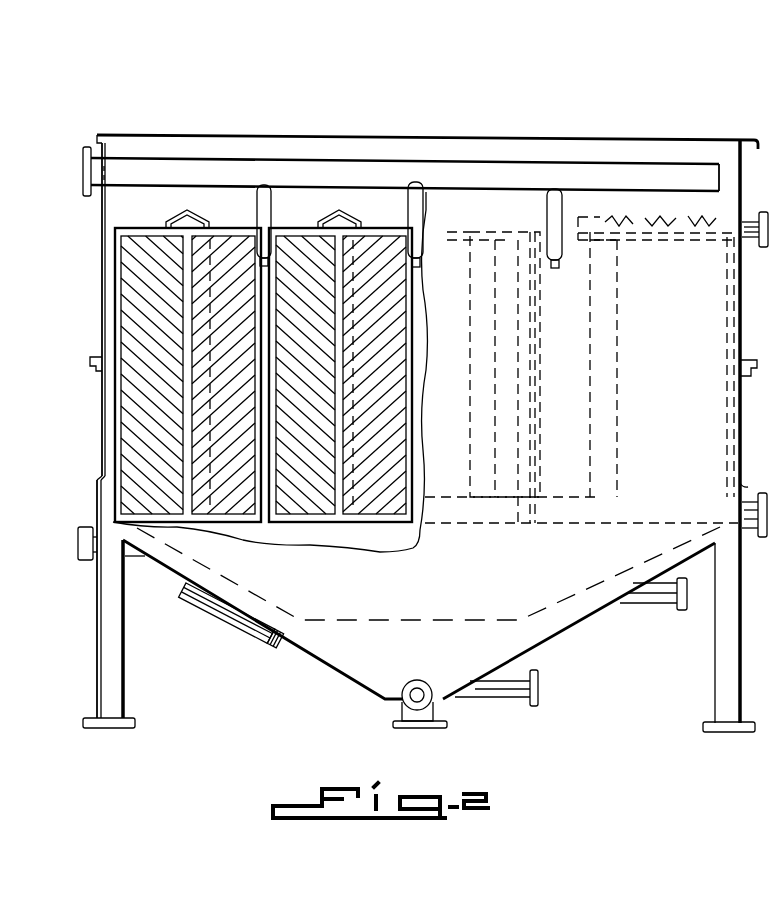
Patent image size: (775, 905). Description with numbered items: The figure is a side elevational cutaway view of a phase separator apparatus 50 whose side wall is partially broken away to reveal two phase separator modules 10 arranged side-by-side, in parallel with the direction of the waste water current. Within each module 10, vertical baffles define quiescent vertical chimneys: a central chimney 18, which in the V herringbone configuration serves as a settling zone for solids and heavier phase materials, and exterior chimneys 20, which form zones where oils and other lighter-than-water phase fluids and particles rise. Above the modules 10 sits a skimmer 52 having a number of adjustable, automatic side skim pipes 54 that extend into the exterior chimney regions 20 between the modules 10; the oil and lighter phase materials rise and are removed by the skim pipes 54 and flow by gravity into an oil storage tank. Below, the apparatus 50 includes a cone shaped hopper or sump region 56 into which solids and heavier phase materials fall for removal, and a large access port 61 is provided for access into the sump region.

The phase separator apparatus 50 is at (623, 127).
The phase separator module 10 is at (166, 194).
The central chimney 18 is at (191, 238).
The exterior chimney 20 is at (278, 228).
The skimmer 52 is at (85, 150).
The side skim pipe 54 is at (267, 205).
The cone shaped hopper or sump region 56 is at (531, 650).
The access port 61 is at (238, 634).